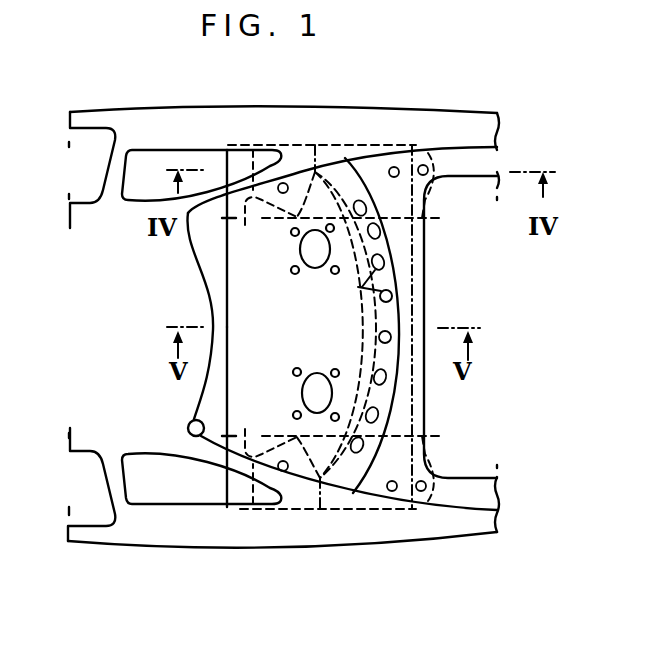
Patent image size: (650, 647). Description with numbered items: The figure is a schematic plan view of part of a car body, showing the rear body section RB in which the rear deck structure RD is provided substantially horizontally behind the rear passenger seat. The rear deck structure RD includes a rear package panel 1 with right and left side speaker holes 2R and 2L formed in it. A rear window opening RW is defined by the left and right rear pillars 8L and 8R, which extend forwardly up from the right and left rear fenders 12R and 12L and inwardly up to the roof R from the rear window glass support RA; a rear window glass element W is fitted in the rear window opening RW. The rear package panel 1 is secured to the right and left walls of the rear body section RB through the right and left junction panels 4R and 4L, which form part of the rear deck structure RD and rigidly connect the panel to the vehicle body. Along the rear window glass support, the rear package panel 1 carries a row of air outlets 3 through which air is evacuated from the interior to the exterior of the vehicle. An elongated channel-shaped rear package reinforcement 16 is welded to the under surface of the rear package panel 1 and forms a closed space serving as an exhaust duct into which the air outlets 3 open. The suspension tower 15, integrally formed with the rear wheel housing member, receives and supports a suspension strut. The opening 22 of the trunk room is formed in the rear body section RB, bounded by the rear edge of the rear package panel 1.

The rear package panel 1 is at (223, 245).
The right side speaker hole 2R is at (300, 248).
The left side speaker hole 2L is at (300, 386).
The air outlets 3 is at (367, 287).
The right junction panel 4R is at (432, 215).
The left junction panel 4L is at (423, 445).
The right rear pillar 8R is at (217, 187).
The left rear pillar 8L is at (240, 505).
The right rear fender 12R is at (152, 108).
The left rear fender 12L is at (160, 543).
The suspension tower 15 is at (269, 327).
The rear package reinforcement 16 is at (425, 403).
The trunk opening 22 is at (481, 282).
The rear window glass element W is at (294, 344).
The roof R is at (89, 369).
The rear window glass support RA is at (398, 320).
The rear body section RB is at (387, 92).
The rear deck structure RD is at (186, 296).
The rear window opening RW is at (187, 426).